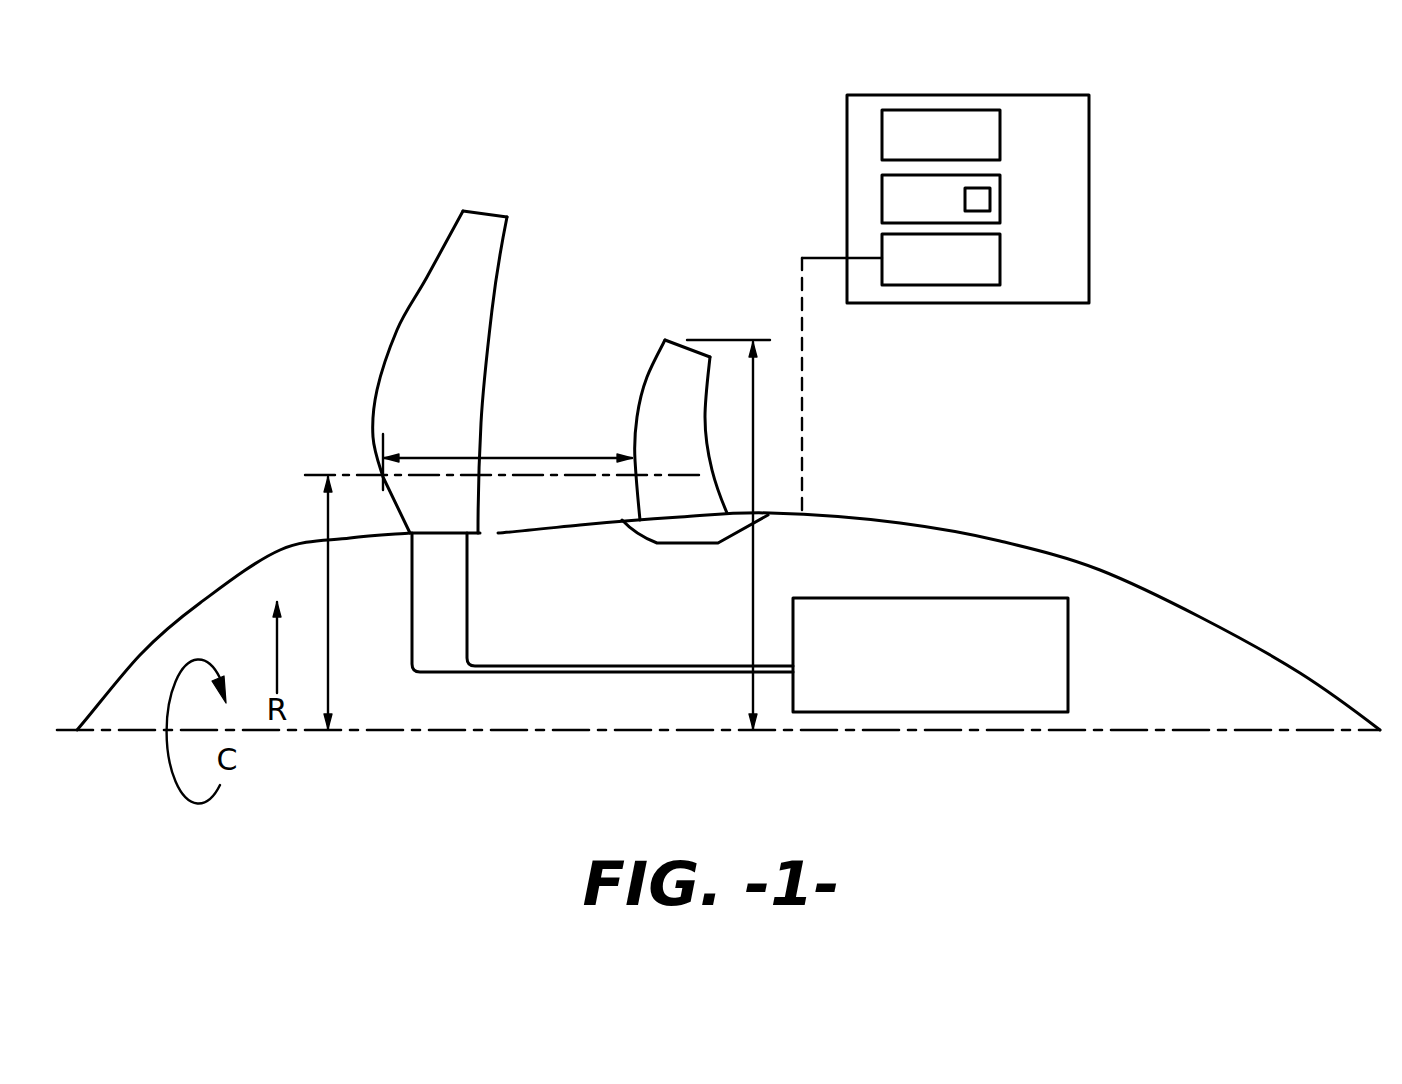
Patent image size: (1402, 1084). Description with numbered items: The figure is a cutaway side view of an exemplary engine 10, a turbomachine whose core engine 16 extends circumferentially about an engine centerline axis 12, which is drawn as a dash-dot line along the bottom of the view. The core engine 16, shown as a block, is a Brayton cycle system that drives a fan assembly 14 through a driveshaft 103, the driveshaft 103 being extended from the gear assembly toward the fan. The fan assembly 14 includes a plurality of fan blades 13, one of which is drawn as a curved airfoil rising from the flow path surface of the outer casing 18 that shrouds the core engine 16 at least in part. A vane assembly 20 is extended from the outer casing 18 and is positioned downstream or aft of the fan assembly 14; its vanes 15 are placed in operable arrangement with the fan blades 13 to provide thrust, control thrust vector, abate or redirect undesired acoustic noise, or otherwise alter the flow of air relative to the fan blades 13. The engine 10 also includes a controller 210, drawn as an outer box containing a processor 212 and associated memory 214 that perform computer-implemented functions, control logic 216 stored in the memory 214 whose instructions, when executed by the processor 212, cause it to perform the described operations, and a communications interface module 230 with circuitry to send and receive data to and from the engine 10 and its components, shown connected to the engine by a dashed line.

The engine 10 is at (1128, 373).
The engine centerline axis 12 is at (410, 733).
The fan blades 13 is at (462, 298).
The fan assembly 14 is at (423, 372).
The vanes 15 is at (663, 402).
The core engine 16 is at (910, 670).
The outer casing 18 is at (920, 523).
The vane assembly 20 is at (733, 322).
The driveshaft 103 is at (528, 665).
The controller 210 is at (981, 305).
The processor 212 is at (915, 150).
The memory 214 is at (901, 213).
The control logic 216 is at (992, 197).
The communications interface module 230 is at (915, 273).